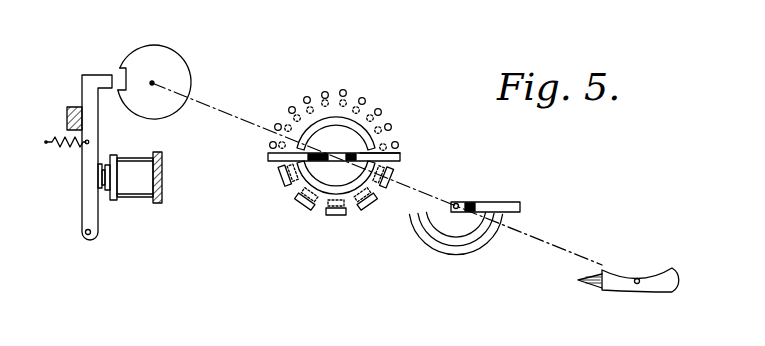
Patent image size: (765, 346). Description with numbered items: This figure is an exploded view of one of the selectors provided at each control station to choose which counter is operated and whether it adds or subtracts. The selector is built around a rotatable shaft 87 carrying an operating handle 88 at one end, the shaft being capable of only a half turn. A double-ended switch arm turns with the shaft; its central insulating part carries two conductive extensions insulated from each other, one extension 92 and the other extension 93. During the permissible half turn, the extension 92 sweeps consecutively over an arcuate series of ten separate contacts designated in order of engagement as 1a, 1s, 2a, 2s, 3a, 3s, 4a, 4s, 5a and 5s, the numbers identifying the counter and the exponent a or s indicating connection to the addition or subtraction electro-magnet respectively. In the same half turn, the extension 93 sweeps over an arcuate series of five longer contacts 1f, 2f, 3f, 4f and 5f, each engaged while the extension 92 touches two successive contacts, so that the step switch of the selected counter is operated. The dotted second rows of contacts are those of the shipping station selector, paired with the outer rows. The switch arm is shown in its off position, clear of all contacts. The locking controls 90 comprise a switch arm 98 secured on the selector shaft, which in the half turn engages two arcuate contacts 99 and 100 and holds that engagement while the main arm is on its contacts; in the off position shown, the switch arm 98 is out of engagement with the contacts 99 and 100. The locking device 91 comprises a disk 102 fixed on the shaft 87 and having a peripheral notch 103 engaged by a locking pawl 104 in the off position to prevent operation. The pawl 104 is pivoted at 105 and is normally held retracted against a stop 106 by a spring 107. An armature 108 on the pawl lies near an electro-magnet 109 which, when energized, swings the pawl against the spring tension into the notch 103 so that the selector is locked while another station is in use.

The rotatable shaft 87 is at (639, 279).
The operating handle 88 is at (628, 284).
The locking controls 90 is at (434, 256).
The locking device 91 is at (143, 66).
The switch arm extension 92 is at (268, 160).
The switch arm extension 93 is at (405, 156).
The switch arm 98 is at (502, 204).
The arcuate contact 99 is at (447, 237).
The arcuate contact 100 is at (425, 237).
The disk 102 is at (132, 66).
The peripheral notch 103 is at (119, 68).
The locking pawl 104 is at (69, 154).
The pivot 105 is at (84, 234).
The stop 106 is at (68, 117).
The spring 107 is at (63, 150).
The armature 108 is at (95, 178).
The electro-magnet 109 is at (137, 190).
The contact 1a is at (269, 146).
The contact 1s is at (275, 125).
The contact 2a is at (290, 107).
The contact 2s is at (305, 97).
The contact 3a is at (325, 91).
The contact 3s is at (344, 90).
The contact 4a is at (364, 99).
The contact 4s is at (380, 110).
The contact 5a is at (391, 125).
The contact 5s is at (398, 143).
The contact 1f is at (393, 172).
The contact 2f is at (370, 212).
The contact 3f is at (335, 218).
The contact 4f is at (300, 211).
The contact 5f is at (278, 183).